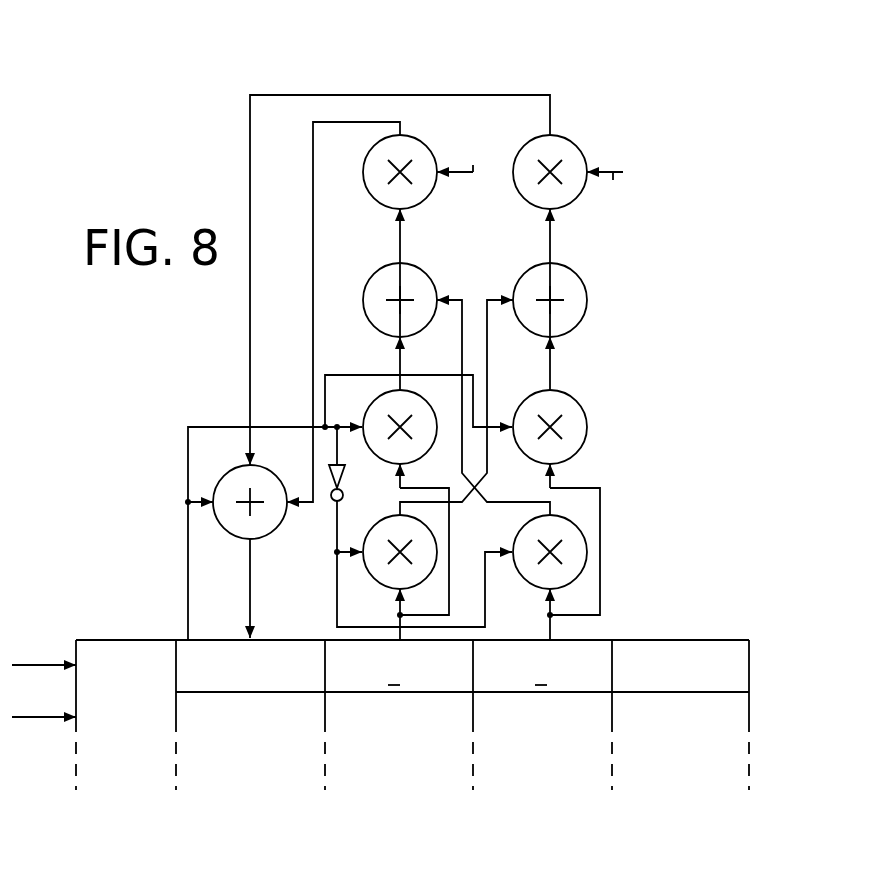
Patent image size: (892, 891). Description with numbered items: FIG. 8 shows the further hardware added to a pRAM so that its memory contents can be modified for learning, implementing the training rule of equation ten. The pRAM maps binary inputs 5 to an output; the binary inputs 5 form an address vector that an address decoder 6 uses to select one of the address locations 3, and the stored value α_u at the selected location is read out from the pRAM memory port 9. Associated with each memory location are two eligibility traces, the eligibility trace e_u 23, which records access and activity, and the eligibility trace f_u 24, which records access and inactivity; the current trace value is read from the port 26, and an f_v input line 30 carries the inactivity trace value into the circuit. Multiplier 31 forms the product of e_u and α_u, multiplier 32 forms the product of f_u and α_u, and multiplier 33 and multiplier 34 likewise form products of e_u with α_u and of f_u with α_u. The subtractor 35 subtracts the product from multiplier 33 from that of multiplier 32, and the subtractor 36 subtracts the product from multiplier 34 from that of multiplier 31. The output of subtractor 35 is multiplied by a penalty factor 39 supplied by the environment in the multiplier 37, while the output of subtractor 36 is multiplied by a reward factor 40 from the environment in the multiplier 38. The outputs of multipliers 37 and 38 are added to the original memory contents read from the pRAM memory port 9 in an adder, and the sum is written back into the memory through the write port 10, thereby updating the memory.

The address locations 3 is at (224, 640).
The binary inputs 5 is at (38, 717).
The address decoder 6 is at (114, 640).
The pRAM memory port 9 is at (188, 472).
The write port 10 is at (253, 630).
The eligibility trace e_u 23 is at (377, 692).
The eligibility trace f_u 24 is at (556, 692).
The port 26 is at (398, 636).
The f_v input line 30 is at (548, 636).
The multiplier 31 is at (264, 468).
The multiplier 32 is at (516, 530).
The multiplier 33 is at (374, 408).
The multiplier 34 is at (568, 396).
The subtractor 35 is at (380, 268).
The subtractor 36 is at (574, 280).
The multiplier 37 is at (410, 139).
The multiplier 38 is at (565, 140).
The penalty factor 39 is at (478, 145).
The reward factor 40 is at (613, 180).